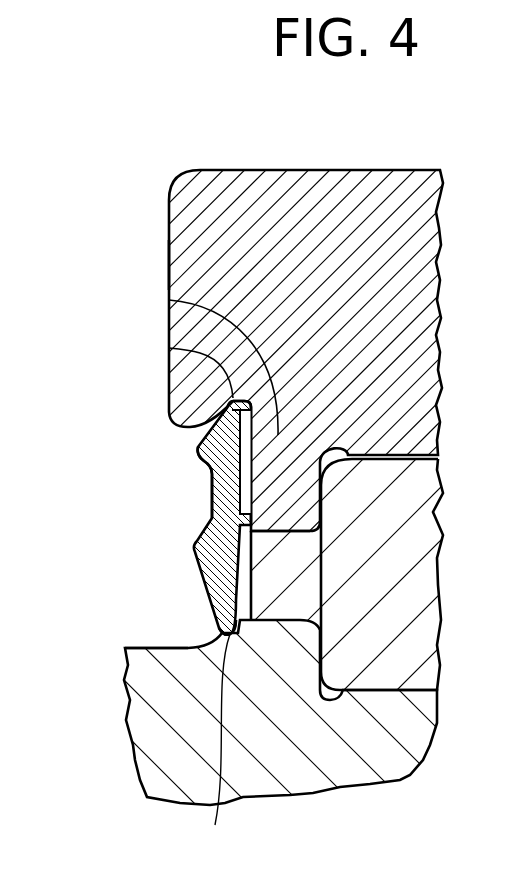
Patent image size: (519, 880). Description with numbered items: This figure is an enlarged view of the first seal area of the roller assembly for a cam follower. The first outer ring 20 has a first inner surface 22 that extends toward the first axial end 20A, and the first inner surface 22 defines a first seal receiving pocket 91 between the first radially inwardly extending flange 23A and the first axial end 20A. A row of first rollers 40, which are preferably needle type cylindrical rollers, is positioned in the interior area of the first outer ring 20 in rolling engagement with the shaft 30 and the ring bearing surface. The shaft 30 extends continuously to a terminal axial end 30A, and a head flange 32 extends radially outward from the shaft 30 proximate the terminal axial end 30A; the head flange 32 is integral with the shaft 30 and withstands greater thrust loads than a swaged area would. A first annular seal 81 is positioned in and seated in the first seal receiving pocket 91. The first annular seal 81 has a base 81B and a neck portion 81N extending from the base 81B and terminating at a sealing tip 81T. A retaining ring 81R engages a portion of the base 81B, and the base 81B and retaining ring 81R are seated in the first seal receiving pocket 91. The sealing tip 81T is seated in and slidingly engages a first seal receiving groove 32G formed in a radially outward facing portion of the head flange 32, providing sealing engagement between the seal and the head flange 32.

The first outer ring 20 is at (399, 187).
The first axial end 20A is at (168, 261).
The first radially inwardly extending flange 23A is at (169, 300).
The first seal receiving pocket 91 is at (169, 348).
The first annular seal 81 is at (183, 517).
The retaining ring 81R is at (245, 444).
The base 81B is at (200, 460).
The neck portion 81N is at (223, 497).
The sealing tip 81T is at (215, 618).
The first rollers 40 is at (407, 518).
The first inner surface 22 is at (273, 533).
The shaft 30 is at (342, 772).
The terminal axial end 30A is at (135, 688).
The head flange 32 is at (260, 722).
The first seal receiving groove 32G is at (205, 748).